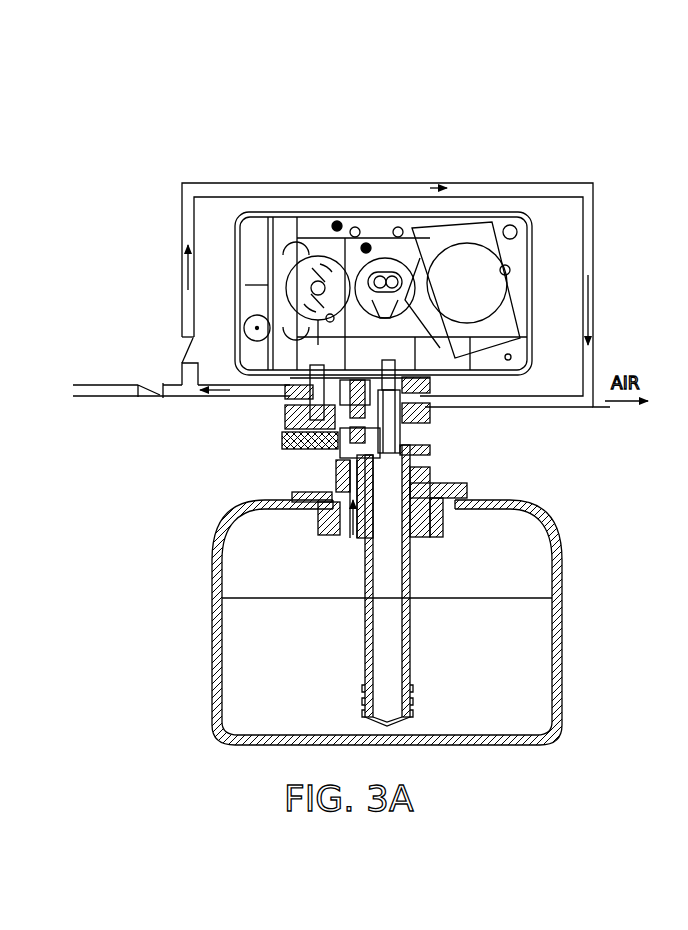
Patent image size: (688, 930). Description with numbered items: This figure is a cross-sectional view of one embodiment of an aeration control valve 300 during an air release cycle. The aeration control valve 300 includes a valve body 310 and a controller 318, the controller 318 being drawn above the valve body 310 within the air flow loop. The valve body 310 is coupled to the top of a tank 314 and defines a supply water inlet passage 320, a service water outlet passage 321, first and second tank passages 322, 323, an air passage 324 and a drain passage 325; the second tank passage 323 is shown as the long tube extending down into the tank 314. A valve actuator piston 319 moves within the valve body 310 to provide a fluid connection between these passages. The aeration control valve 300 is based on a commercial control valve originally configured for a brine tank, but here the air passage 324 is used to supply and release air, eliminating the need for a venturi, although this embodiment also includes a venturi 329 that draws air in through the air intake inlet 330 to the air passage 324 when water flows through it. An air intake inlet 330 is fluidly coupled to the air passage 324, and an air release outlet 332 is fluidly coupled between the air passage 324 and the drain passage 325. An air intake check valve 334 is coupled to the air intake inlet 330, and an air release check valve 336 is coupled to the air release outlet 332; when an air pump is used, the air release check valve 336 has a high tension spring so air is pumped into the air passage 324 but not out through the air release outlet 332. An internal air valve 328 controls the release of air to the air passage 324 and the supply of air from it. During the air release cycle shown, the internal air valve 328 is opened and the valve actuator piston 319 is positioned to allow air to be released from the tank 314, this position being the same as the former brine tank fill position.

The aeration control valve 300 is at (268, 180).
The valve body 310 is at (528, 447).
The tank 314 is at (212, 583).
The controller 318 is at (236, 265).
The valve actuator piston 319 is at (345, 470).
The supply water inlet passage 320 is at (432, 463).
The service water outlet passage 321 is at (420, 442).
The first tank passage 322 is at (345, 545).
The second tank passage 323 is at (390, 545).
The air passage 324 is at (290, 395).
The drain passage 325 is at (425, 405).
The internal air valve 328 is at (290, 424).
The venturi 329 is at (290, 445).
The air intake inlet 330 is at (113, 399).
The air release outlet 332 is at (182, 305).
The air intake check valve 334 is at (158, 401).
The air release check valve 336 is at (180, 353).